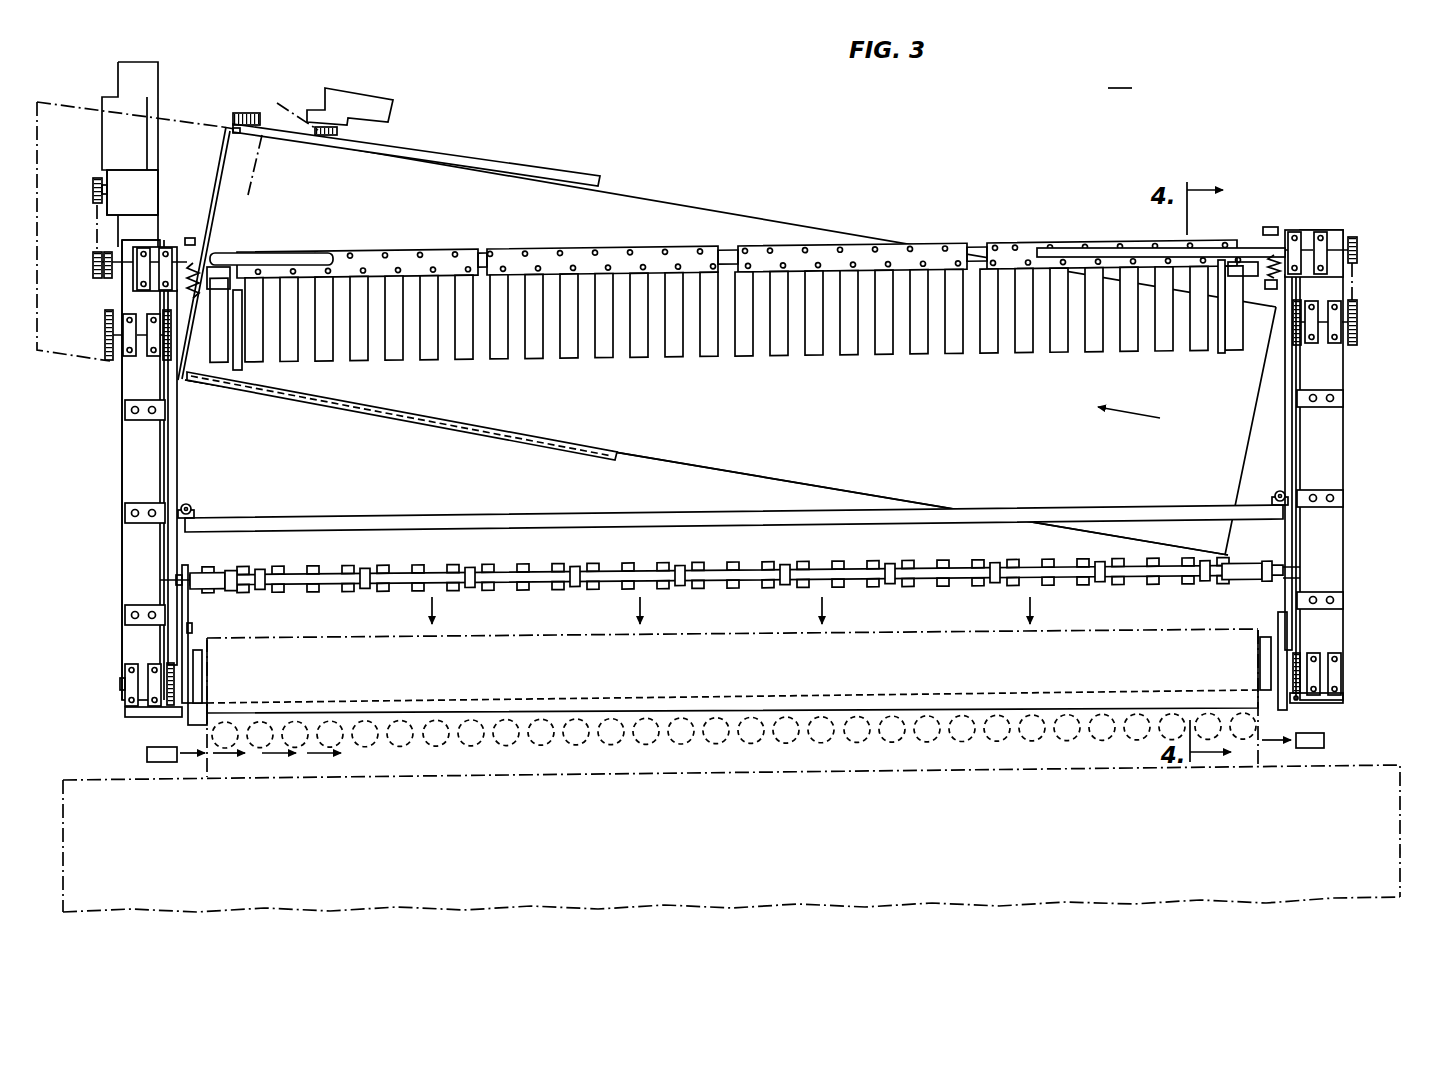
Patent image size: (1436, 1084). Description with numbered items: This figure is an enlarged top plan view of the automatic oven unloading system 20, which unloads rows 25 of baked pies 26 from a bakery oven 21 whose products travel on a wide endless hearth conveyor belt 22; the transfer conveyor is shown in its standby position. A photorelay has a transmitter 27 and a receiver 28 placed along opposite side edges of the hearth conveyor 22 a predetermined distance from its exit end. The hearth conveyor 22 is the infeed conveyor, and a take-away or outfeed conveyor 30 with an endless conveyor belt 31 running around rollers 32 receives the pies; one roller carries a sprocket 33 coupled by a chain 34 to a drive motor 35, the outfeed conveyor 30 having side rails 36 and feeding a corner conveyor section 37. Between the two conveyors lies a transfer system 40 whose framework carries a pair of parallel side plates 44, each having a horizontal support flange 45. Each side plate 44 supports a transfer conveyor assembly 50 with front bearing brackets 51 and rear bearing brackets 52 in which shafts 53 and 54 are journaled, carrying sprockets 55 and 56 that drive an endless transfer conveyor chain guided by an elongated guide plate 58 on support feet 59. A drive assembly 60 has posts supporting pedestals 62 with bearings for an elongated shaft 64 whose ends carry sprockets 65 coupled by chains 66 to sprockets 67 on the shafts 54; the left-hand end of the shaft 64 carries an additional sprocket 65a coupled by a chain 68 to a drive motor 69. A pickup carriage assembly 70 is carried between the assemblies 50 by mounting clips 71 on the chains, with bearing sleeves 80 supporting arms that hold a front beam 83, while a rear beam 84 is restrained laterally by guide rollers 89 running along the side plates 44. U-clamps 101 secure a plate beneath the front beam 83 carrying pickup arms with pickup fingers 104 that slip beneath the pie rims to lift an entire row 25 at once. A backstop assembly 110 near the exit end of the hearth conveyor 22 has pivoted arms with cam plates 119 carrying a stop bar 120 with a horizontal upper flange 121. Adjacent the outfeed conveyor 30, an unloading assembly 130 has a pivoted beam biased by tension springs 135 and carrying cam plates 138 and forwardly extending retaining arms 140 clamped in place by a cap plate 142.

The automatic oven unloading system 20 is at (1120, 75).
The bakery oven 21 is at (1403, 790).
The hearth conveyor belt 22 is at (533, 637).
The rows 25 is at (776, 742).
The baked pies 26 is at (466, 748).
The transmitter 27 is at (147, 755).
The receiver 28 is at (1324, 740).
The outfeed conveyor 30 is at (634, 190).
The endless conveyor belt 31 is at (688, 207).
The rollers 32 is at (262, 160).
The sprocket 33 is at (238, 113).
The chain 34 is at (286, 102).
The drive motor 35 is at (357, 92).
The side rails 36 is at (484, 158).
The corner conveyor section 37 is at (64, 100).
The transfer system 40 is at (105, 463).
The side plates 44 is at (120, 559).
The horizontal support flange 45 is at (130, 437).
The transfer conveyor assemblies 50 is at (196, 431).
The front bearing brackets 51 is at (152, 666).
The rear bearing brackets 52 is at (122, 368).
The shaft 53 is at (120, 686).
The shaft 54 is at (1320, 343).
The sprocket 55 is at (165, 712).
The sprocket 56 is at (168, 313).
The guide plate 58 is at (178, 466).
The support feet 59 is at (125, 503).
The drive assembly 60 is at (94, 162).
The pedestals 62 is at (166, 247).
The elongated shaft 64 is at (312, 256).
The sprockets 65 is at (1356, 238).
The additional sprocket 65a is at (92, 266).
The chains 66 is at (112, 284).
The sprockets 67 is at (163, 355).
The chain 68 is at (97, 218).
The drive motor 69 is at (160, 178).
The pickup carriage assembly 70 is at (1118, 496).
The mounting clips 71 is at (178, 578).
The bearing sleeve 80 is at (218, 572).
The front beam 83 is at (1136, 585).
The rear beam 84 is at (1023, 512).
The guide rollers 89 is at (194, 505).
The U-clamps 101 is at (470, 571).
The pickup finger 104 is at (945, 592).
The backstop assembly 110 is at (1242, 678).
The cam plate 119 is at (199, 650).
The stop bar 120 is at (728, 697).
The horizontal upper flange 121 is at (862, 722).
The unloading assembly 130 is at (690, 380).
The tension springs 135 is at (200, 250).
The cam plates 138 is at (243, 368).
The retaining arms 140 is at (816, 358).
The cap plate 142 is at (516, 252).